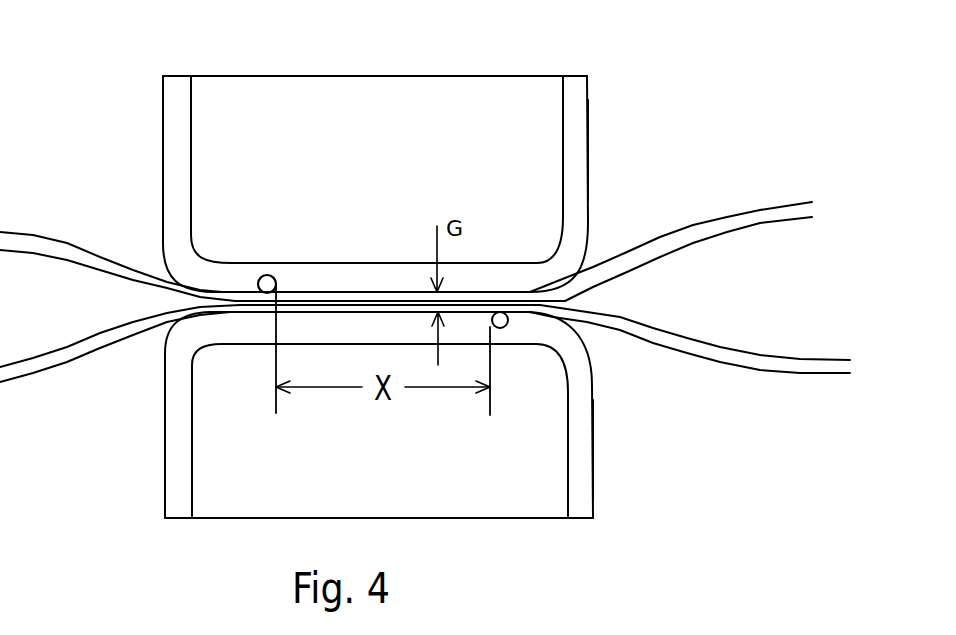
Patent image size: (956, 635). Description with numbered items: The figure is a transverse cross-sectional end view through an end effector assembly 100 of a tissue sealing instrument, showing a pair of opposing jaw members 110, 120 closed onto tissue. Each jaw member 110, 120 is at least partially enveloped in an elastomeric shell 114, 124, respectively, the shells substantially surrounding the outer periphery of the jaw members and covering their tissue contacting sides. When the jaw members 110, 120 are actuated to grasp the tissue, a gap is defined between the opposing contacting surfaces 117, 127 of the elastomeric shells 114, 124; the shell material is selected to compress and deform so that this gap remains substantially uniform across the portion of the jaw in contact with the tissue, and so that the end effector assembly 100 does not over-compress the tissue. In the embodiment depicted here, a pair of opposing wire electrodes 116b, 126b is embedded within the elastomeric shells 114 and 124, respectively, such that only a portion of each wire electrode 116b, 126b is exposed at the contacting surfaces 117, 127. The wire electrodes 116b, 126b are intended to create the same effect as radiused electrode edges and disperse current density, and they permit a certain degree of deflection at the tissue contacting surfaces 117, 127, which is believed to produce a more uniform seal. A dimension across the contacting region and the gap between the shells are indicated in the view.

The end effector assembly 100 is at (103, 88).
The jaw member 110 is at (404, 126).
The elastomeric shell 114 is at (578, 163).
The wire electrode 116b is at (258, 280).
The contacting surface 117 is at (295, 291).
The jaw member 120 is at (390, 494).
The elastomeric shell 124 is at (583, 460).
The wire electrode 126b is at (503, 330).
The contacting surface 127 is at (360, 308).